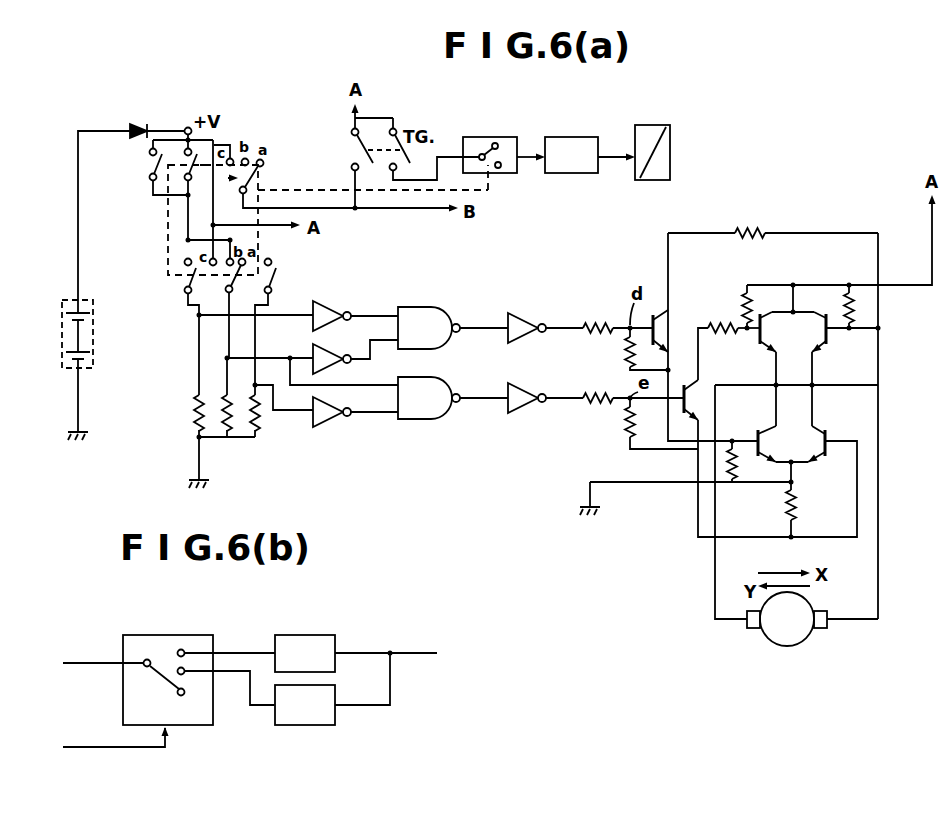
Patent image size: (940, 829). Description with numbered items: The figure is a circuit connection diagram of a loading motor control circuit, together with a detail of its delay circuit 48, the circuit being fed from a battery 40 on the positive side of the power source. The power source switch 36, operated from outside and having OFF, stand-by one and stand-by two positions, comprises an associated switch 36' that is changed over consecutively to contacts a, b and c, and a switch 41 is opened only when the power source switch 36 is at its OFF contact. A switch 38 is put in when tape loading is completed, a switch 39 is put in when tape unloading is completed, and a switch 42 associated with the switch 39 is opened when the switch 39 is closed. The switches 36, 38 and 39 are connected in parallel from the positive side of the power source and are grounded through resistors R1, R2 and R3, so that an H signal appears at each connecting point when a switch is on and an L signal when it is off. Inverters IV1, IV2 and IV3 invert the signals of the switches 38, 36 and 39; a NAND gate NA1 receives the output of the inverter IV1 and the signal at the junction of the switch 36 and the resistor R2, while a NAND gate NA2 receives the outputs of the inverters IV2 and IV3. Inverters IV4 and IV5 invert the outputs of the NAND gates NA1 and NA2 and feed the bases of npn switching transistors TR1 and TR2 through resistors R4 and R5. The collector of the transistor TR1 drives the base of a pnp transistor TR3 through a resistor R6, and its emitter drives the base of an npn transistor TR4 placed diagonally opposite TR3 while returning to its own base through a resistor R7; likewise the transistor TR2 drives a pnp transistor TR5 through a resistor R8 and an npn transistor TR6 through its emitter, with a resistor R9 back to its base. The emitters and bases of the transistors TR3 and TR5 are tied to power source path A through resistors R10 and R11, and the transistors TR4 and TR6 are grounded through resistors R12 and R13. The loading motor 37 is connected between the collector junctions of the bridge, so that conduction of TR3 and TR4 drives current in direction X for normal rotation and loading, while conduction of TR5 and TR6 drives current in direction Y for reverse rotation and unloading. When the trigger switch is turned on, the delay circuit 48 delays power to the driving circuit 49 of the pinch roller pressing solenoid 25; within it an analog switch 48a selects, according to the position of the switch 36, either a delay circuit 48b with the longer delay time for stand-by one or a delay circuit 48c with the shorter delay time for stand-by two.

The pinch roller pressing solenoid 25 is at (655, 124).
The power source switch 36 is at (328, 220).
The associated switch 36' is at (245, 311).
The loading motor 37 is at (805, 642).
The switch 38 is at (274, 290).
The switch 39 is at (184, 288).
The battery 40 is at (93, 352).
The switch 41 is at (150, 166).
The switch 42 is at (200, 195).
The delay circuit 48 is at (490, 136).
The analog switch 48a is at (175, 634).
The delay circuit 48b is at (338, 728).
The delay circuit 48c is at (307, 634).
The driving circuit 49 is at (575, 136).
The resistor R1 is at (189, 408).
The resistor R2 is at (225, 425).
The resistor R3 is at (262, 415).
The resistor R4 is at (600, 405).
The resistor R5 is at (592, 322).
The resistor R6 is at (718, 322).
The resistor R7 is at (626, 438).
The resistor R8 is at (755, 230).
The resistor R9 is at (624, 354).
The resistor R10 is at (742, 305).
The resistor R11 is at (855, 312).
The resistor R12 is at (797, 510).
The resistor R13 is at (736, 472).
The inverter IV1 is at (330, 425).
The inverter IV2 is at (338, 335).
The inverter IV3 is at (330, 300).
The inverter IV4 is at (520, 414).
The inverter IV5 is at (520, 312).
The NAND gate NA1 is at (430, 422).
The NAND gate NA2 is at (432, 305).
The npn switching transistor TR1 is at (690, 385).
The npn switching transistor TR2 is at (665, 322).
The pnp switching transistor TR3 is at (784, 333).
The npn switching transistor TR4 is at (840, 420).
The pnp switching transistor TR5 is at (830, 346).
The npn switching transistor TR6 is at (748, 432).